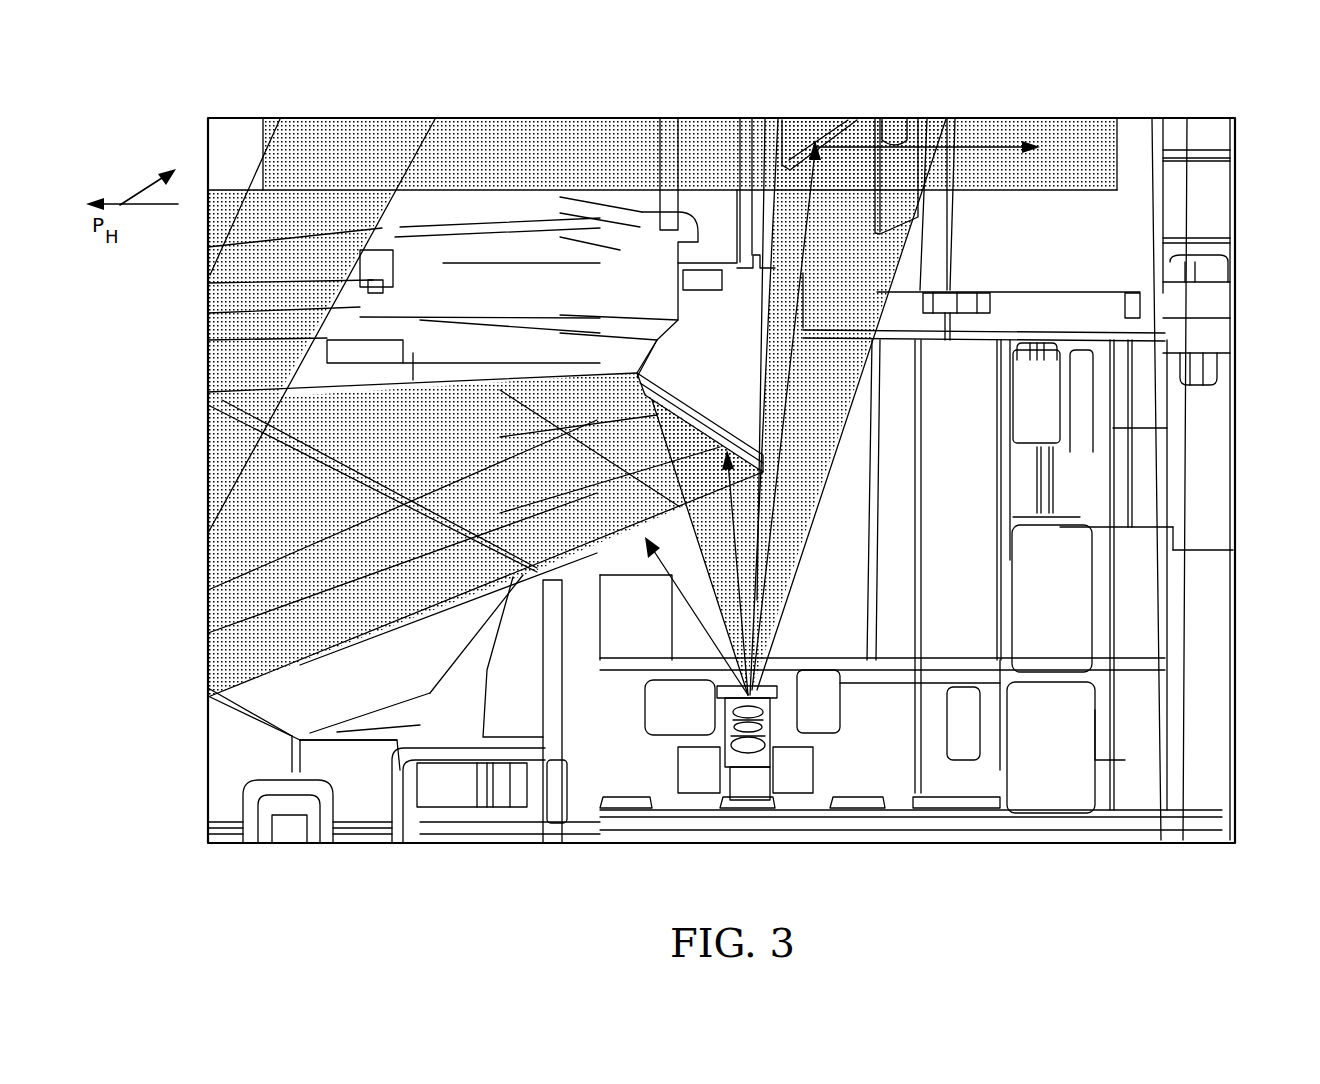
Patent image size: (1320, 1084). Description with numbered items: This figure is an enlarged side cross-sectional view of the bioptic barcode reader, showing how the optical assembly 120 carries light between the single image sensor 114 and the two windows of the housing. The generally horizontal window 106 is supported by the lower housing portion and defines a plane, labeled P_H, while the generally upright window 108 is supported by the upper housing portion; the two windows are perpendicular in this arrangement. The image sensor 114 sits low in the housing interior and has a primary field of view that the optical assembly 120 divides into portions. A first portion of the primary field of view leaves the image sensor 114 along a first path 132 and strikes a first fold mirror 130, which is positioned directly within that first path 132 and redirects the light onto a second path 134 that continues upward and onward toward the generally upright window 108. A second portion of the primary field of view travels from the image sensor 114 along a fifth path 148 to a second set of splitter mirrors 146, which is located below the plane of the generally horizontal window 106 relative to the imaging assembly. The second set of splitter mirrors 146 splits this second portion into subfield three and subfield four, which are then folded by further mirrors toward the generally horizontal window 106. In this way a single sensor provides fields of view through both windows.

The generally horizontal window 106 is at (317, 263).
The generally upright window 108 is at (763, 133).
The image sensor 114 is at (743, 793).
The optical assembly 120 is at (655, 548).
The first fold mirror 130 is at (830, 137).
The first path 132 is at (850, 390).
The second path 134 is at (975, 142).
The second set of splitter mirrors 146 is at (705, 405).
The fifth path 148 is at (738, 585).